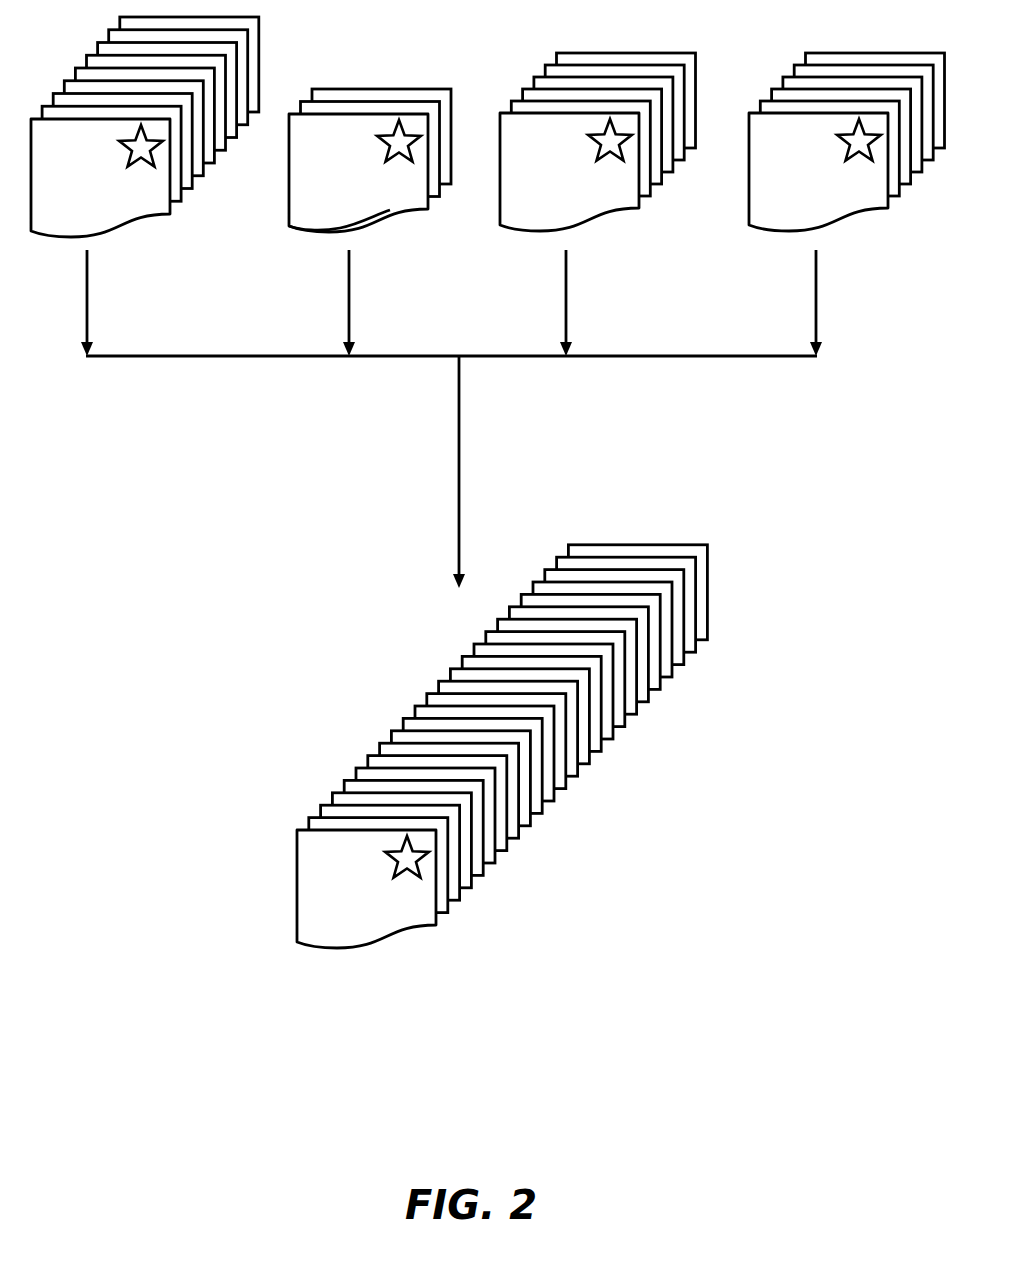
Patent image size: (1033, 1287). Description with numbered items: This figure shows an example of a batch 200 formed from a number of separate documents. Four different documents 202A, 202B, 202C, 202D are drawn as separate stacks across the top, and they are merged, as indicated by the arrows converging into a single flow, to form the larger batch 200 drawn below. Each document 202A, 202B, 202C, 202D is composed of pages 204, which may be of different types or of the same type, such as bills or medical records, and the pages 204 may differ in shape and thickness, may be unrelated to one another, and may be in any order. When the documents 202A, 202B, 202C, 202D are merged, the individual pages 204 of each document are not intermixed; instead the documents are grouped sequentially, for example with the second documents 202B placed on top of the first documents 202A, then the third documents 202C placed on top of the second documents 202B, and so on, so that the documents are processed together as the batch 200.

The batch 200 is at (383, 904).
The first documents 202A is at (114, 190).
The second documents 202B is at (377, 190).
The third documents 202C is at (594, 190).
The fourth documents 202D is at (849, 190).
The pages 204 is at (390, 210).